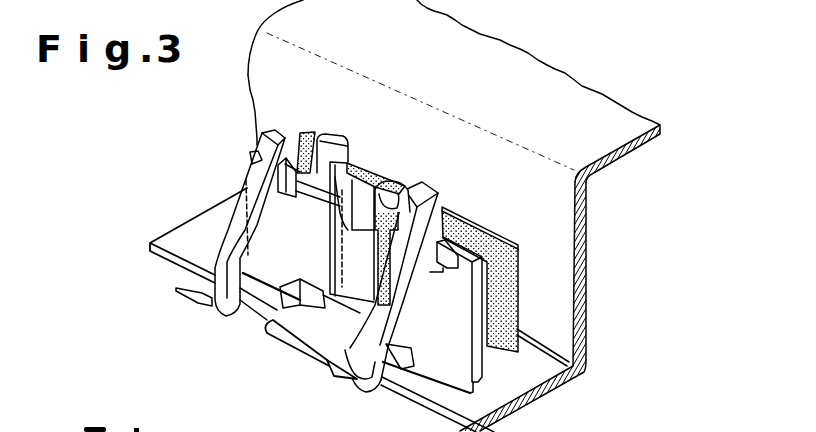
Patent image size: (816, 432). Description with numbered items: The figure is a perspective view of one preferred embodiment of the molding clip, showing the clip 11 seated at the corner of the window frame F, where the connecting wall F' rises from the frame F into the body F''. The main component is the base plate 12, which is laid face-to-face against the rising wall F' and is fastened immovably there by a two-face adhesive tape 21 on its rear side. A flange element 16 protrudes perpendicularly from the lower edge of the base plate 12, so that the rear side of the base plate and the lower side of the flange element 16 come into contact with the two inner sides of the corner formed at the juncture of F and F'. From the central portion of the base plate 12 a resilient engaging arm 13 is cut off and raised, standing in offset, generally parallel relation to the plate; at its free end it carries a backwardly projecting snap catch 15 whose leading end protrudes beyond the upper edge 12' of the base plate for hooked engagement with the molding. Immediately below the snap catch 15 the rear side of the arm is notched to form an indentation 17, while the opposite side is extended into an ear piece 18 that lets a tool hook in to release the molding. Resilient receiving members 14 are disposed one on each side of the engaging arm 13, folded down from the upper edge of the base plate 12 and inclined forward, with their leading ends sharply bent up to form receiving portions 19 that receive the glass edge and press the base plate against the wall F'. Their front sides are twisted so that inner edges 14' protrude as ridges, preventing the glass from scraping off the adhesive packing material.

The clip 11 is at (272, 345).
The base plate 12 is at (500, 279).
The upper edge of the base plate 12' is at (437, 281).
The resilient engaging arm 13 is at (330, 258).
The resilient receiving members 14 is at (312, 261).
The inner edges 14' is at (355, 253).
The snap catch 15 is at (369, 181).
The flange element 16 is at (303, 353).
The indentation 17 is at (399, 188).
The ear piece 18 is at (348, 155).
The receiving portions 19 is at (195, 302).
The two-face adhesive tape 21 is at (494, 243).
The window frame F is at (483, 380).
The connecting wall F' is at (438, 220).
The body F'' is at (472, 92).